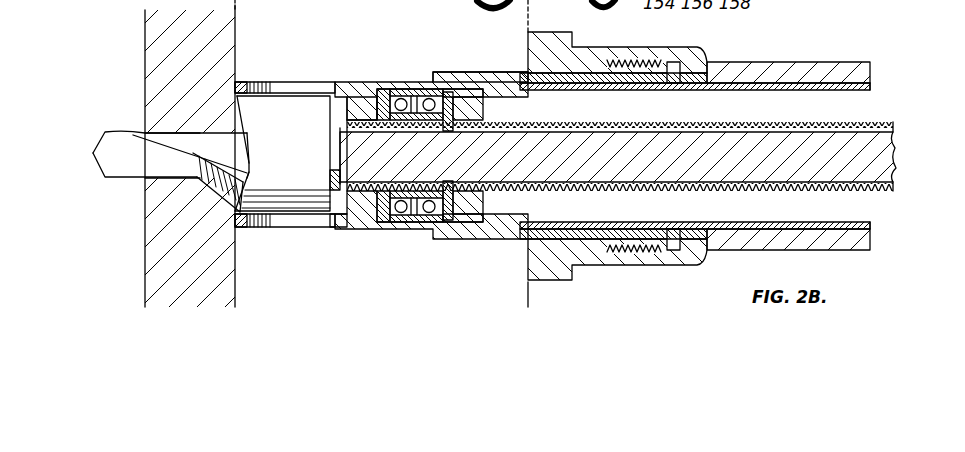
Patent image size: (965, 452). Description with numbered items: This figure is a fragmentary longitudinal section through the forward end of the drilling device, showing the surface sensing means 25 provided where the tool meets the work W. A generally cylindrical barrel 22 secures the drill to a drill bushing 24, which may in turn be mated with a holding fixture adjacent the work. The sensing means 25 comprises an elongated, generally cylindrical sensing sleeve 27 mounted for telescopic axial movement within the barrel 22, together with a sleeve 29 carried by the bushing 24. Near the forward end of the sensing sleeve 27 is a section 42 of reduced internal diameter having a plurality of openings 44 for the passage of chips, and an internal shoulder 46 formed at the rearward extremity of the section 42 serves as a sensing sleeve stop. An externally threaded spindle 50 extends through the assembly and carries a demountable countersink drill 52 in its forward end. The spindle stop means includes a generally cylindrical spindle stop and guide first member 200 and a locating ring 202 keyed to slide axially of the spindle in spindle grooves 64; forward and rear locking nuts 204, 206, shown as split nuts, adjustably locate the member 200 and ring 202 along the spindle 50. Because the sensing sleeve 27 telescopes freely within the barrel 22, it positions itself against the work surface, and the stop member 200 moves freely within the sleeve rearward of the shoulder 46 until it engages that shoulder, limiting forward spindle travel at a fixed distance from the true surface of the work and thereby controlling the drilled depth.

The workpiece wall W is at (236, 47).
The openings 44 is at (309, 82).
The countersink drill 52 is at (277, 105).
The sensing means 25 is at (350, 82).
The spindle stop and guide first member 200 is at (383, 99).
The locating ring 202 is at (447, 88).
The sensing sleeve 27 is at (449, 92).
The sleeve 29 is at (513, 72).
The rear locking nut 206 is at (478, 110).
The barrel 22 is at (833, 67).
The spindle grooves 64 is at (830, 133).
The spindle 50 is at (885, 147).
The drill bushing 24 is at (565, 281).
The forward locking nut 204 is at (332, 222).
The section of reduced internal diameter 42 is at (355, 217).
The internal shoulder 46 is at (385, 224).